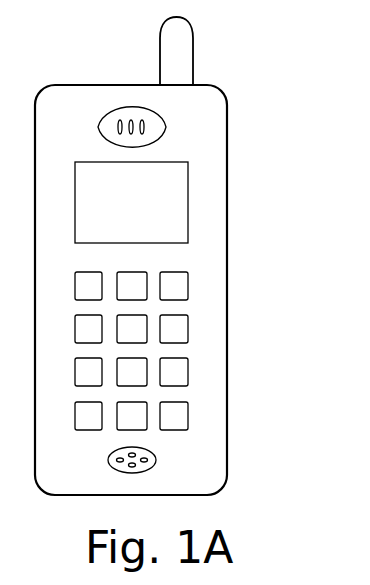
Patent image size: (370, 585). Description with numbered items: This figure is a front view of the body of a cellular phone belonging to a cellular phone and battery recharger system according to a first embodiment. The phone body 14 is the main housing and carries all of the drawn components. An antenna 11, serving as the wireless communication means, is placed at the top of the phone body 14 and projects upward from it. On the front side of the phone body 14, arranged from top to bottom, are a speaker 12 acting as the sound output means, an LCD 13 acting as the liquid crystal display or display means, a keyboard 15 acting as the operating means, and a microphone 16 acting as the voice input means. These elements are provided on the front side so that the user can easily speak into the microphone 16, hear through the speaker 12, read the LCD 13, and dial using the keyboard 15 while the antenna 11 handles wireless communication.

The antenna 11 is at (177, 58).
The speaker 12 is at (166, 127).
The LCD 13 is at (178, 184).
The phone body 14 is at (222, 248).
The keyboard 15 is at (188, 285).
The microphone 16 is at (156, 455).